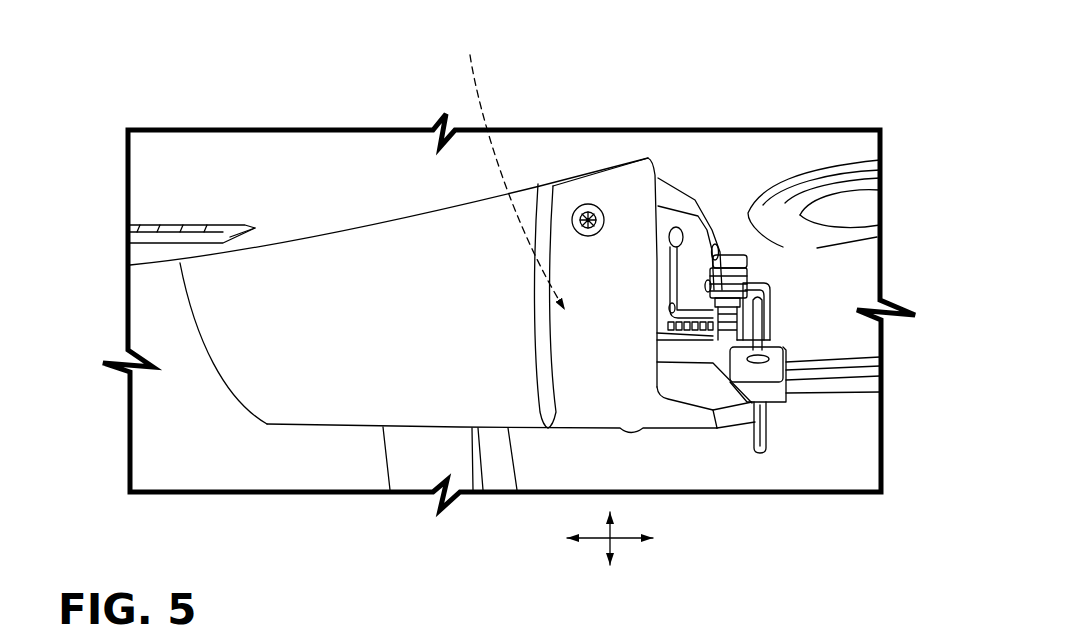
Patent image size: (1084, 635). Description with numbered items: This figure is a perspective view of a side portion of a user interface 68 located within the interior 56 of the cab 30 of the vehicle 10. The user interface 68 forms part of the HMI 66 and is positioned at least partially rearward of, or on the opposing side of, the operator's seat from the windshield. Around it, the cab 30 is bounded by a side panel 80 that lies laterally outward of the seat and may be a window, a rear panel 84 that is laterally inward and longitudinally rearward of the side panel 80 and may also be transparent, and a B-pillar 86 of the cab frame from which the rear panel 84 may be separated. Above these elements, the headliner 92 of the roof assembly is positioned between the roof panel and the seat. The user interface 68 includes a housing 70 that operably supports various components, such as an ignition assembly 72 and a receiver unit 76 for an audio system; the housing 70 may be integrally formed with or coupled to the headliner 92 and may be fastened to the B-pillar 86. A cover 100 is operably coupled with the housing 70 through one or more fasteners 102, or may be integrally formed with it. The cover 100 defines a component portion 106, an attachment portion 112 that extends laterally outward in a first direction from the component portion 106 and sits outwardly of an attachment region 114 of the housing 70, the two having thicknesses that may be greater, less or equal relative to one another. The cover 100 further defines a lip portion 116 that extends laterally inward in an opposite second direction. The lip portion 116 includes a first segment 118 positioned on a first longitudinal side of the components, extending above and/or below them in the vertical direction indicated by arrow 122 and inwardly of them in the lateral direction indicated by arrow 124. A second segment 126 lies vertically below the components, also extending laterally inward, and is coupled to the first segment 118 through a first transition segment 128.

The vehicle 10 is at (290, 117).
The cab 30 is at (168, 443).
The interior 56 is at (160, 350).
The HMI 66 is at (528, 167).
The user interface 68 is at (250, 367).
The housing 70 is at (422, 253).
The ignition assembly 72 is at (740, 334).
The receiver unit 76 is at (683, 223).
The side panel 80 is at (296, 472).
The rear panel 84 is at (845, 448).
The B-pillar 86 is at (420, 467).
The headliner 92 is at (752, 137).
The cover 100 is at (715, 213).
The fastener 102 is at (588, 204).
The component portion 106 is at (702, 193).
The attachment portion 112 is at (577, 267).
The attachment region 114 is at (504, 170).
The lip portion 116 is at (880, 392).
The first segment 118 is at (647, 247).
The arrow indicating vertical direction 122 is at (605, 530).
The arrow indicating lateral direction 124 is at (628, 540).
The second segment 126 is at (757, 403).
The first transition segment 128 is at (660, 407).